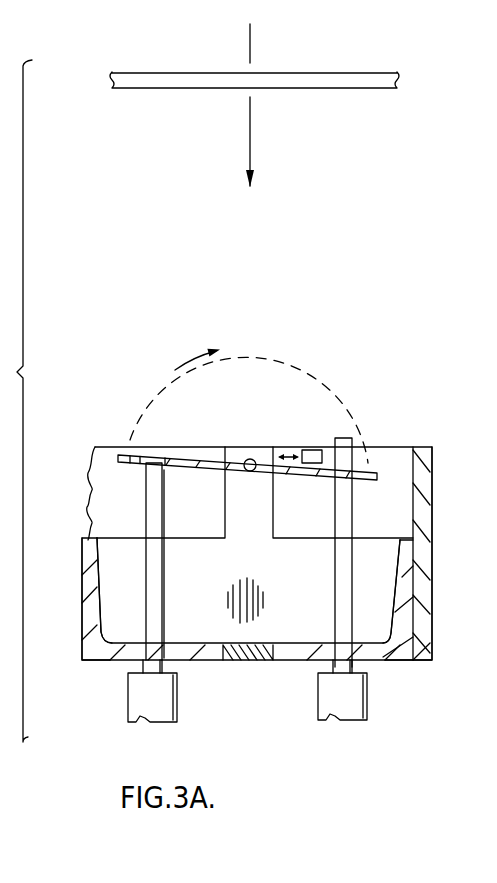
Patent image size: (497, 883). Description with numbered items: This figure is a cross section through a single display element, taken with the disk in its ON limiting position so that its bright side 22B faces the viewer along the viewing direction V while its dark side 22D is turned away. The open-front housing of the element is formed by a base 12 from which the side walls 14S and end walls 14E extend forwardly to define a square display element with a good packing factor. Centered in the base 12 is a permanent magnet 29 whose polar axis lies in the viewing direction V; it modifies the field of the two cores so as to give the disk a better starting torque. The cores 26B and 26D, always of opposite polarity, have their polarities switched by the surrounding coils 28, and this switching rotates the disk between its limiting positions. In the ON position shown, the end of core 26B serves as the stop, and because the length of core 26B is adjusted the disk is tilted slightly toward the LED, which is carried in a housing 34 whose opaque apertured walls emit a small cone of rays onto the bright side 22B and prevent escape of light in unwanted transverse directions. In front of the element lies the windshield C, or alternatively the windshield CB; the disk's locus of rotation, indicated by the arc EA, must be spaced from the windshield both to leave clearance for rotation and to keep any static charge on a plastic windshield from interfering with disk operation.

The base 12 is at (122, 654).
The end walls 14E is at (261, 553).
The side walls 14S is at (407, 565).
The dark side 22D is at (122, 457).
The bright side 22B is at (148, 462).
The core 26B is at (165, 555).
The core 26D is at (356, 440).
The coils 28 is at (177, 708).
The permanent magnet 29 is at (256, 661).
The housing 34 is at (319, 448).
The arc EA is at (330, 380).
The viewing direction V is at (260, 105).
The windshield C is at (254, 114).
The windshield CB is at (205, 89).